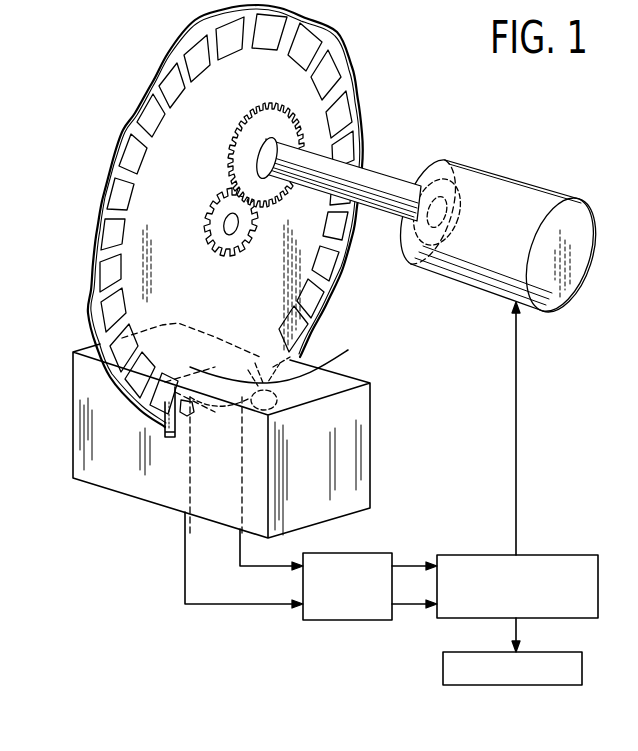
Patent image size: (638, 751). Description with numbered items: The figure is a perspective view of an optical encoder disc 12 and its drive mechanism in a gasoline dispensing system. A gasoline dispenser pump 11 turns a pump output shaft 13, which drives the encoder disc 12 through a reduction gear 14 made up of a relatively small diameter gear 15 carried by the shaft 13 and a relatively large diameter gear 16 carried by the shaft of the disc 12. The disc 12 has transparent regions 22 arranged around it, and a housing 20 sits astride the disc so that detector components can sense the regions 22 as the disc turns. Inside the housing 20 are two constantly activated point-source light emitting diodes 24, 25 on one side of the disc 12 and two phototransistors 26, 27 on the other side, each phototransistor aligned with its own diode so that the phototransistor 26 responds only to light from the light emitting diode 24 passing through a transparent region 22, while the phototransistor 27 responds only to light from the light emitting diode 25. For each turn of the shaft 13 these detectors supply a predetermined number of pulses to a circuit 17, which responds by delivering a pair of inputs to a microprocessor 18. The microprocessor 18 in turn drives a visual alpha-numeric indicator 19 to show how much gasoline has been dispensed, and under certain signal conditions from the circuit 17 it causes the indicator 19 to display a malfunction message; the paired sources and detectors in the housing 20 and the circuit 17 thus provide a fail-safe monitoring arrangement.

The gasoline dispenser pump 11 is at (513, 200).
The optical encoder disc 12 is at (328, 303).
The pump output shaft 13 is at (368, 186).
The reduction gear 14 is at (224, 172).
The relatively small diameter gear 15 is at (240, 244).
The relatively large diameter gear 16 is at (300, 123).
The circuit 17 is at (330, 620).
The microprocessor 18 is at (553, 562).
The visual alpha-numeric indicator 19 is at (568, 680).
The housing 20 is at (352, 474).
The transparent region 22 is at (262, 36).
The light emitting diode 24 is at (165, 395).
The light emitting diode 25 is at (232, 382).
The phototransistor 26 is at (188, 405).
The phototransistor 27 is at (289, 362).